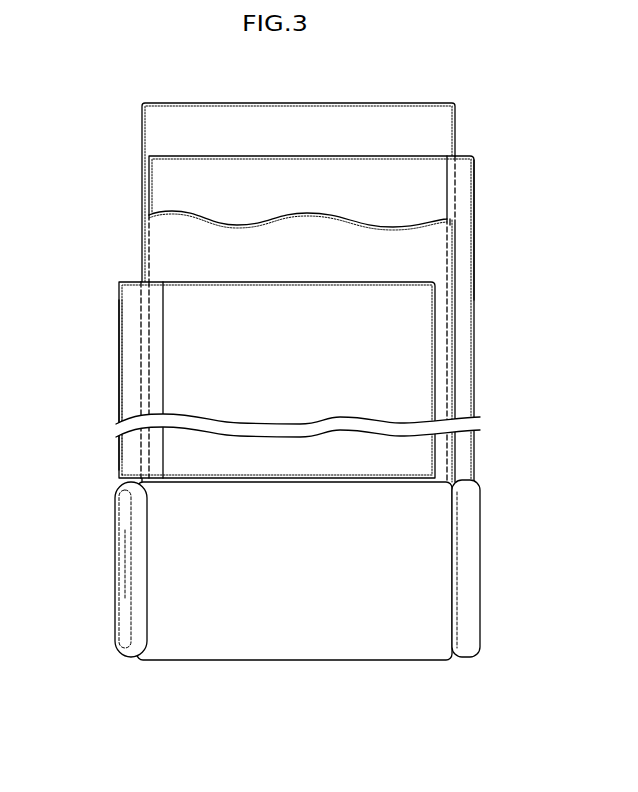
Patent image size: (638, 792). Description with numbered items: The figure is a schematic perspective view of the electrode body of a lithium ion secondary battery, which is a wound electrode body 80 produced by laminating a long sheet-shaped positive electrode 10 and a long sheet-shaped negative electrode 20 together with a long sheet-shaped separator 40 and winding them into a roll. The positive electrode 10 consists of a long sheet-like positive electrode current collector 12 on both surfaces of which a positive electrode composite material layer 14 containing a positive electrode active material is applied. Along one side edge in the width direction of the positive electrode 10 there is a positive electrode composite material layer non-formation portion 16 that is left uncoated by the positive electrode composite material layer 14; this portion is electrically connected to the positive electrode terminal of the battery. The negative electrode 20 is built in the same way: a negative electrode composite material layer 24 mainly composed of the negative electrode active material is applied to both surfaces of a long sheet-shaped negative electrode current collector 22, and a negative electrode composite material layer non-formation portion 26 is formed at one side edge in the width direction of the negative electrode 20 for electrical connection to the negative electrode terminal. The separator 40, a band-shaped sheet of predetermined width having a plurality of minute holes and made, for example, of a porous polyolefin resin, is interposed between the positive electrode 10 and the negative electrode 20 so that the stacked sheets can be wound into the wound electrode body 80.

The positive electrode 10 is at (226, 380).
The positive electrode current collector 12 is at (120, 408).
The positive electrode composite material layer 14 is at (177, 299).
The positive electrode composite material layer non-formation portion 16 is at (135, 380).
The negative electrode 20 is at (363, 316).
The negative electrode current collector 22 is at (475, 322).
The negative electrode composite material layer 24 is at (445, 175).
The negative electrode composite material layer non-formation portion 26 is at (465, 292).
The separator 40 is at (160, 121).
The wound electrode body 80 is at (360, 647).